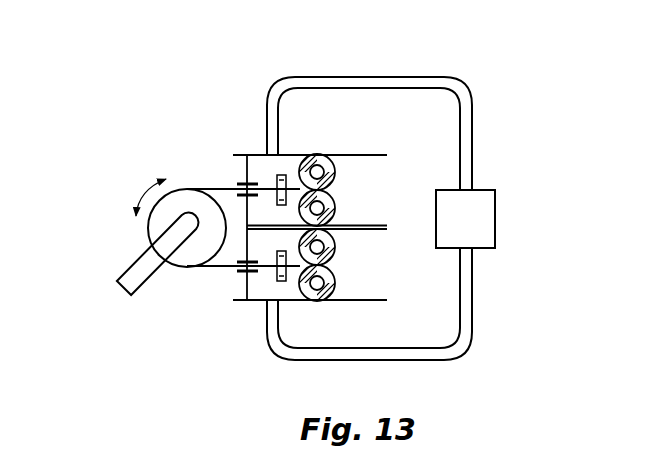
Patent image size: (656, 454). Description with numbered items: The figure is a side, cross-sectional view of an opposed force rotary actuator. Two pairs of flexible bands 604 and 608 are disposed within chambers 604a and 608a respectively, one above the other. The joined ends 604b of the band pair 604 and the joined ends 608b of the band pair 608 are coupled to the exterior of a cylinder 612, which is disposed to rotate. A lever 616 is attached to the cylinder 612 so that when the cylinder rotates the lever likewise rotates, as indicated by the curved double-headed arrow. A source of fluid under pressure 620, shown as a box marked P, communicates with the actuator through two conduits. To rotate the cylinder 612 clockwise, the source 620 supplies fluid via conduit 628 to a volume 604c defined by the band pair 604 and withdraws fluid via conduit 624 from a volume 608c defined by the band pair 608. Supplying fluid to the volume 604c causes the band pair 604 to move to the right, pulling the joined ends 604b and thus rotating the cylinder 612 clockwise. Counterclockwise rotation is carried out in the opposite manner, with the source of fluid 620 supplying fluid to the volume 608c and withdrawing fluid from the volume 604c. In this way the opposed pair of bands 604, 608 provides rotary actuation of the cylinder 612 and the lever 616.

The flexible band pair 604 is at (340, 192).
The chamber 604a is at (380, 172).
The joined ends 604b is at (212, 188).
The volume 604c is at (258, 167).
The flexible band pair 608 is at (340, 267).
The chamber 608a is at (352, 289).
The joined ends 608b is at (210, 267).
The volume 608c is at (260, 289).
The cylinder 612 is at (150, 228).
The lever 616 is at (117, 272).
The source of fluid under pressure 620 is at (480, 189).
The conduit 624 is at (420, 361).
The conduit 628 is at (370, 77).